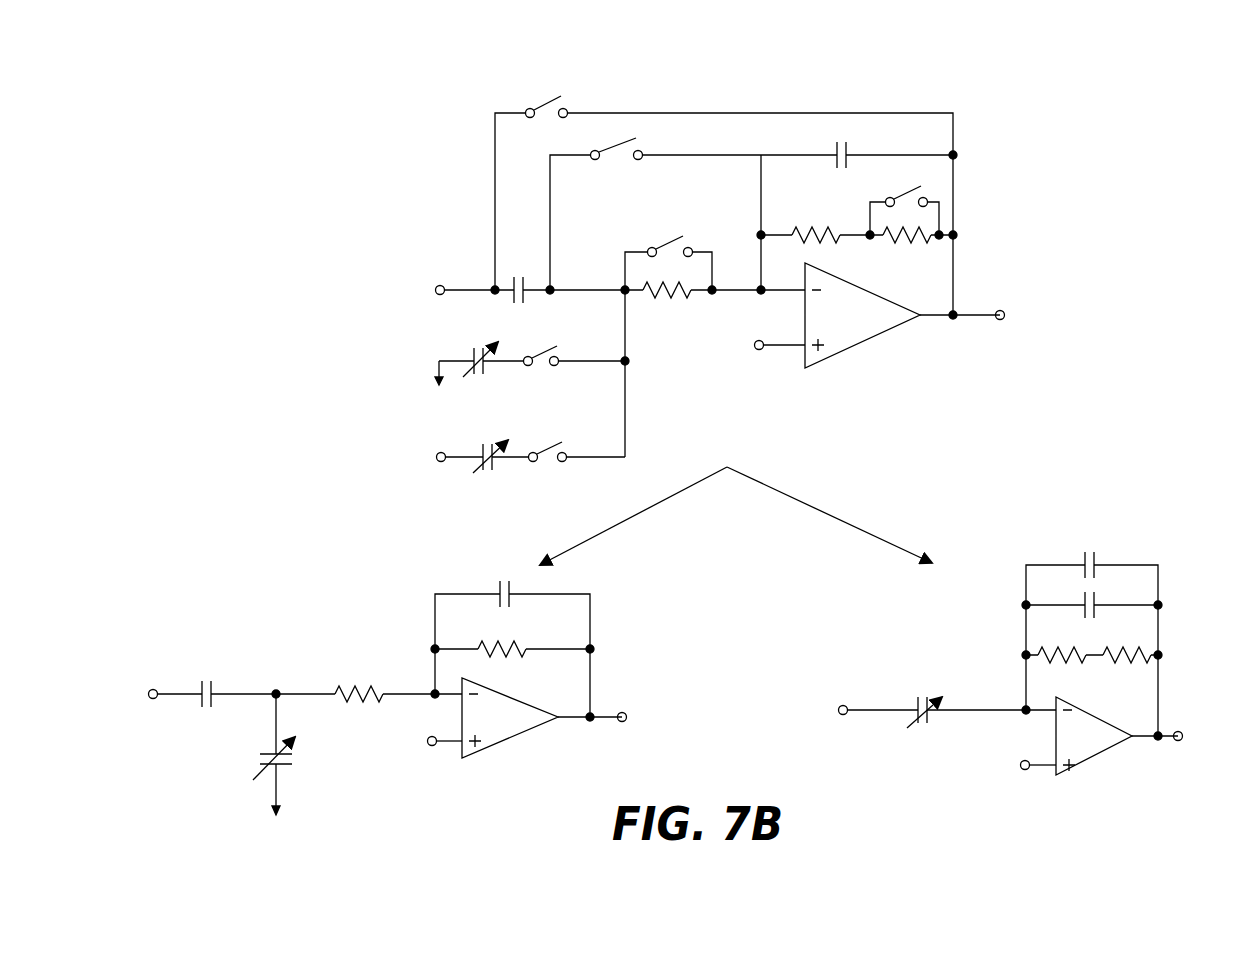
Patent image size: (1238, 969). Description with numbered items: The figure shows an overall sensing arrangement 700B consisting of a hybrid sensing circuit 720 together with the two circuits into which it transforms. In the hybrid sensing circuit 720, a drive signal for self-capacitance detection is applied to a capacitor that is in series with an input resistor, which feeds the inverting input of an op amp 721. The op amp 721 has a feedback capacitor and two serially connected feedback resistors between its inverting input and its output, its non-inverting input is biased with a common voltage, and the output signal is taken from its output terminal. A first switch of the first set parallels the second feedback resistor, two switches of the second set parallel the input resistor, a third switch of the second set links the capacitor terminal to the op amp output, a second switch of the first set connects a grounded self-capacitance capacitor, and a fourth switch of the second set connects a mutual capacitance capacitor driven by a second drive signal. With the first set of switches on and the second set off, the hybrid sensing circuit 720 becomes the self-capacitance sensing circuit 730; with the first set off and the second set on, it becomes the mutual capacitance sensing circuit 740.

The sensing circuit configuration 700B is at (1083, 110).
The hybrid sensing circuit 720 is at (698, 95).
The op amp 721 is at (870, 338).
The self-capacitance sensing circuit 730 is at (358, 633).
The mutual capacitance sensing circuit 740 is at (1153, 558).